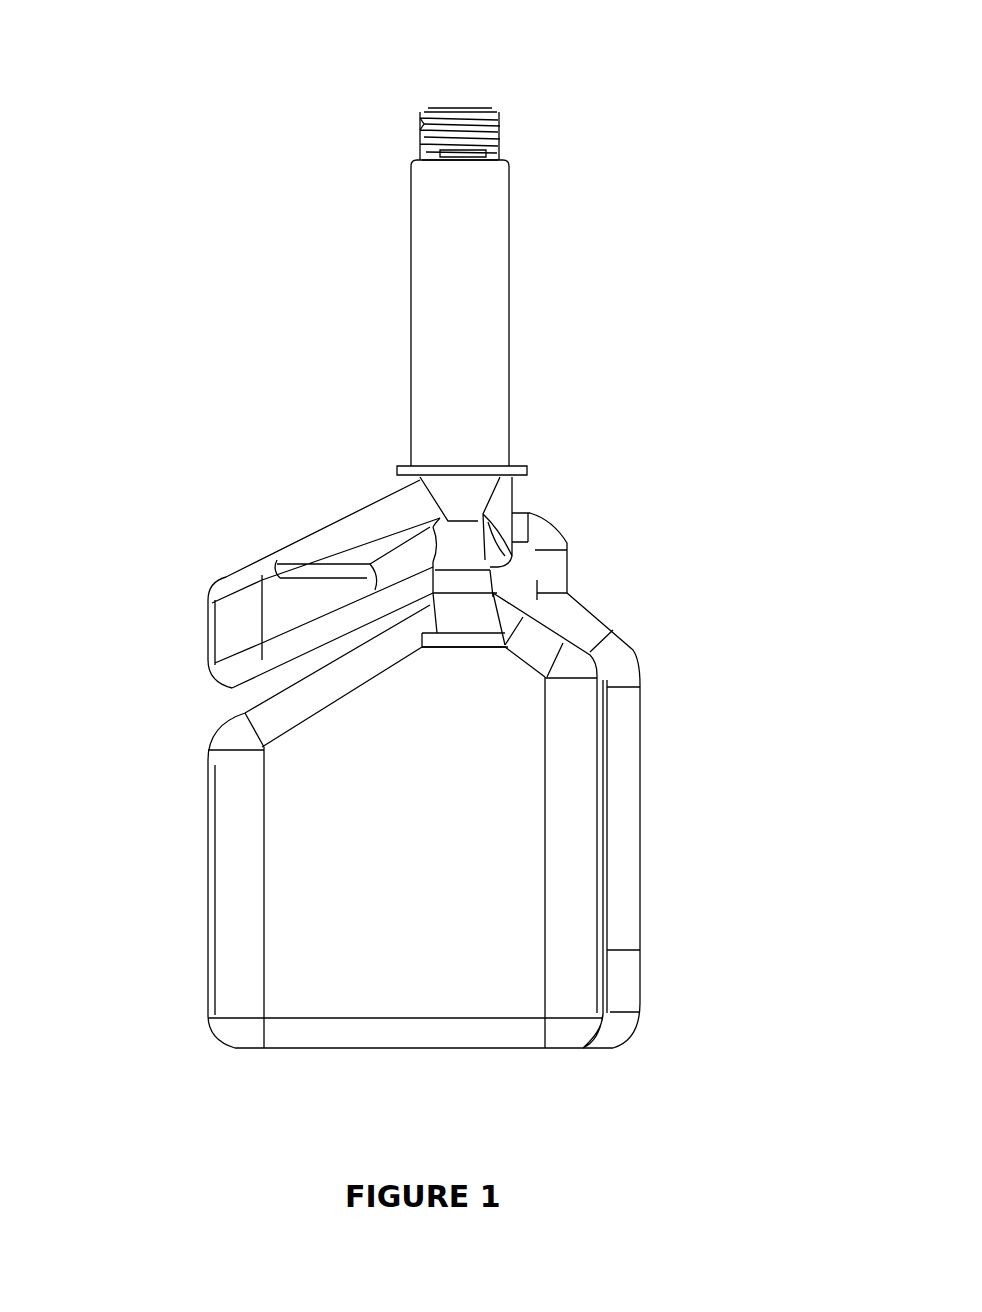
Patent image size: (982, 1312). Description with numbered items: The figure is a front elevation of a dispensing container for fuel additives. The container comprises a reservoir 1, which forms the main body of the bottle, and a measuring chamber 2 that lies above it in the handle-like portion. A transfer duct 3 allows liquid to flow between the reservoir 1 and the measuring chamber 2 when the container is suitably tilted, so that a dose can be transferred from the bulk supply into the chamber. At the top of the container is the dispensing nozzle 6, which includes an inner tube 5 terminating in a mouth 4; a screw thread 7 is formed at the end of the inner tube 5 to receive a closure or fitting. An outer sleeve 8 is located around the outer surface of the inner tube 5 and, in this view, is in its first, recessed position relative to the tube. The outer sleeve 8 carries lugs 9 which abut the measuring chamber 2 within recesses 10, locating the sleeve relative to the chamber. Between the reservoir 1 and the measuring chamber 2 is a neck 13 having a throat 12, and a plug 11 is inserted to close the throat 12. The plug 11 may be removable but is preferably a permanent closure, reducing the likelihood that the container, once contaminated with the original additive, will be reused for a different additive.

The reservoir 1 is at (335, 874).
The measuring chamber 2 is at (358, 553).
The transfer duct 3 is at (622, 808).
The mouth 4 is at (458, 106).
The inner tube 5 is at (428, 150).
The dispensing nozzle 6 is at (560, 193).
The screw thread 7 is at (503, 128).
The outer sleeve 8 is at (458, 283).
The lugs 9 is at (462, 492).
The recesses 10 is at (490, 512).
The plug 11 is at (447, 533).
The throat 12 is at (496, 562).
The neck 13 is at (458, 598).